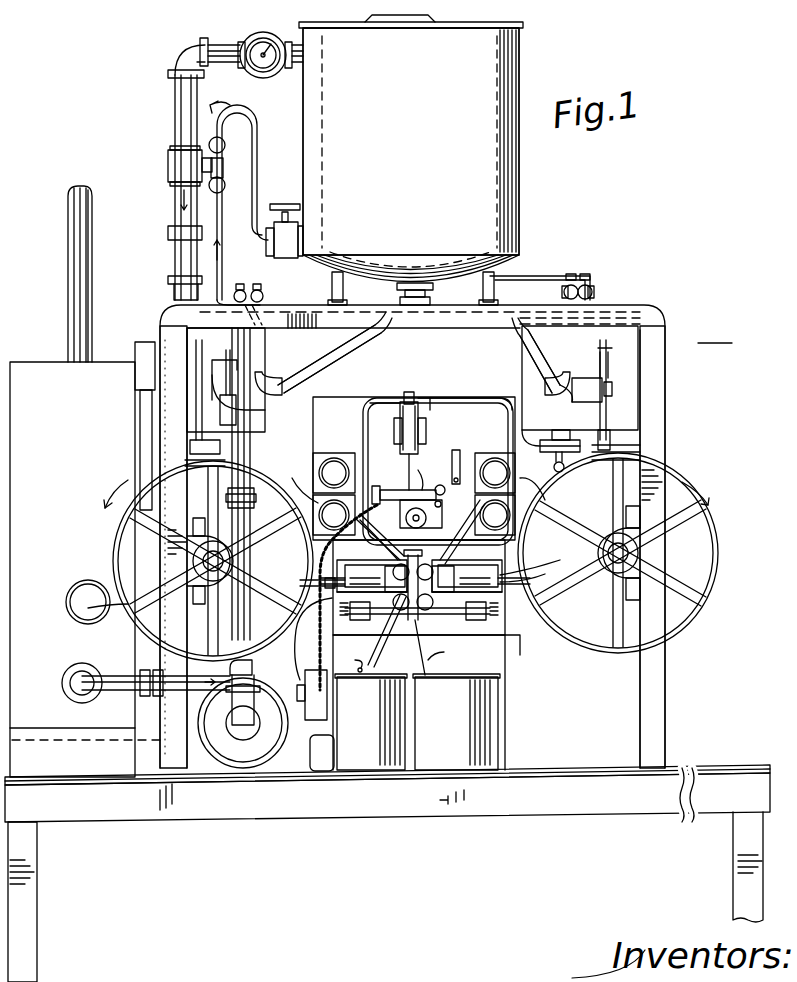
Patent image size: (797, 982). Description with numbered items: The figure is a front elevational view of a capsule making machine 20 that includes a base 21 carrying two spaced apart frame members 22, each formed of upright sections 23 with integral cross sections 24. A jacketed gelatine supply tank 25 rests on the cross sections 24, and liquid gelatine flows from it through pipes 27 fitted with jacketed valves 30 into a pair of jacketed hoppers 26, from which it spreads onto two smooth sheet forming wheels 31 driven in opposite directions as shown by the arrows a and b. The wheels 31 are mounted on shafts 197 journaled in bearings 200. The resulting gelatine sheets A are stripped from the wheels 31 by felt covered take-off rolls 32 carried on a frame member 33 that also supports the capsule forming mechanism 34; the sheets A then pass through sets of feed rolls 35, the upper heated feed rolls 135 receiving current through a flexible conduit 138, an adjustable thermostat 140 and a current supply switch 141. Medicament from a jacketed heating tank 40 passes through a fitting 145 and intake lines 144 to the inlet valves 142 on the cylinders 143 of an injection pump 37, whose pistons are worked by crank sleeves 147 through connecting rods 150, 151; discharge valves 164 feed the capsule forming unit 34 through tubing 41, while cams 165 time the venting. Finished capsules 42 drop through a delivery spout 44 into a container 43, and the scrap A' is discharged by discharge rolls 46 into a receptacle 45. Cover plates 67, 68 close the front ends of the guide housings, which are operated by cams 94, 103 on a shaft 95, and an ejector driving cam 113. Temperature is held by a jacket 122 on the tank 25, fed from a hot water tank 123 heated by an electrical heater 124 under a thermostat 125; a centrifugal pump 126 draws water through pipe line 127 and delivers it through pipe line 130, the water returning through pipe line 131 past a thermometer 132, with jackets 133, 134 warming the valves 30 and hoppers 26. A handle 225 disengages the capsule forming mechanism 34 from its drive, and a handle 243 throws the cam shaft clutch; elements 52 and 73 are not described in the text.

The capsule making machine 20 is at (715, 334).
The base 21 is at (558, 763).
The frame members 22 is at (654, 310).
The upright sections 23 is at (655, 400).
The cross sections 24 is at (512, 301).
The gelatine supply tank 25 is at (512, 186).
The hoppers 26 is at (195, 441).
The pipes 27 is at (340, 353).
The valves 30 is at (290, 374).
The sheet forming wheels 31 is at (118, 553).
The take-off rolls 32 is at (345, 478).
The frame member 33 is at (362, 398).
The capsule forming mechanism 34 is at (419, 587).
The feed rolls 35 is at (396, 565).
The injection pump 37 is at (425, 430).
The medicament heating tank 40 is at (518, 348).
The tubing 41 is at (363, 440).
The finished capsules 42 is at (351, 658).
The container 43 is at (376, 760).
The delivery spout 44 is at (376, 653).
The receptacle 45 is at (482, 713).
The discharge rolls 46 is at (412, 612).
The block 52 is at (430, 512).
The cover plate 67 is at (363, 575).
The cover plate 68 is at (481, 574).
The guide 73 is at (420, 560).
The cam 94 is at (326, 582).
The shaft 95 is at (330, 600).
The cam 103 is at (512, 576).
The driving cam 113 is at (512, 568).
The jacket 122 is at (515, 63).
The hot water tank 123 is at (30, 362).
The electrical heater 124 is at (78, 594).
The thermostat 125 is at (146, 345).
The centrifugal pump 126 is at (254, 687).
The pipe line 127 is at (116, 666).
The pipe line 130 is at (250, 448).
The pipe line 131 is at (178, 113).
The thermometer 132 is at (259, 40).
The jackets 133 is at (232, 438).
The jackets 134 is at (254, 413).
The feed rolls 135 is at (552, 464).
The flexible conduit 138 is at (398, 500).
The thermostat 140 is at (308, 688).
The current supply switch 141 is at (320, 768).
The inlet valves 142 is at (425, 398).
The cylinders 143 is at (410, 392).
The intake lines 144 is at (490, 398).
The fitting 145 is at (545, 452).
The crank sleeves 147 is at (431, 473).
The connecting rods 150 is at (414, 455).
The connecting rods 151 is at (410, 490).
The discharge valve 164 is at (398, 410).
The cams 165 is at (438, 528).
The shafts 197 is at (210, 562).
The bearings 200 is at (238, 564).
The handle 225 is at (522, 640).
The handle 243 is at (458, 458).
The gelatine sheets A is at (414, 482).
The gelatine scrap A' is at (436, 647).
The arrow a is at (111, 494).
The arrow b is at (695, 479).